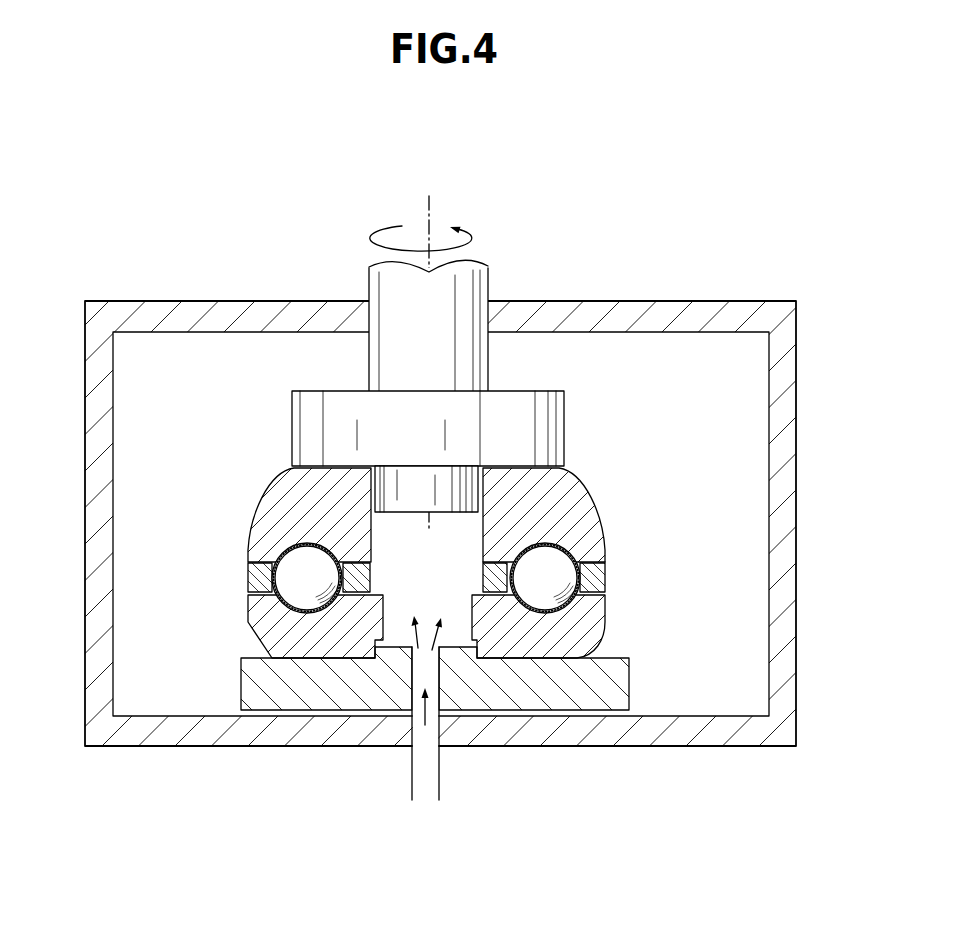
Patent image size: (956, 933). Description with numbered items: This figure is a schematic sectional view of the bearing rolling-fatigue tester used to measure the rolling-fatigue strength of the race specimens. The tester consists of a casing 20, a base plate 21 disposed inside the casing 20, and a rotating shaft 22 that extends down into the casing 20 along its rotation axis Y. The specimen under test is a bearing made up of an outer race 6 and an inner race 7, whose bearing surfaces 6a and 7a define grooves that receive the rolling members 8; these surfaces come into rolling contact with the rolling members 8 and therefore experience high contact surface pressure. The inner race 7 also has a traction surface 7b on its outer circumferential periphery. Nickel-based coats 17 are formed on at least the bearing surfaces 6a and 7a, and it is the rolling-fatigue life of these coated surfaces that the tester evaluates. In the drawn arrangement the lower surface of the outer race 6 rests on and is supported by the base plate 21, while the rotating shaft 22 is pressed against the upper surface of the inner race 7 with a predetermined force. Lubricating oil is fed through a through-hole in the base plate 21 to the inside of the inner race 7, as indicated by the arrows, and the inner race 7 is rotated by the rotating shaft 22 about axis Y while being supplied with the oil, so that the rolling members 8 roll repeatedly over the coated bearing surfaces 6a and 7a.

The casing 20 is at (708, 316).
The rotating shaft 22 is at (335, 430).
The inner race 7 is at (427, 532).
The bearing surface 7a is at (580, 548).
The traction surface 7b is at (587, 508).
The outer race 6 is at (427, 639).
The bearing surface 6a is at (561, 613).
The rolling member 8 is at (283, 575).
The nickel-based coat 17 is at (305, 540).
The base plate 21 is at (296, 698).
The rotation axis Y is at (428, 303).